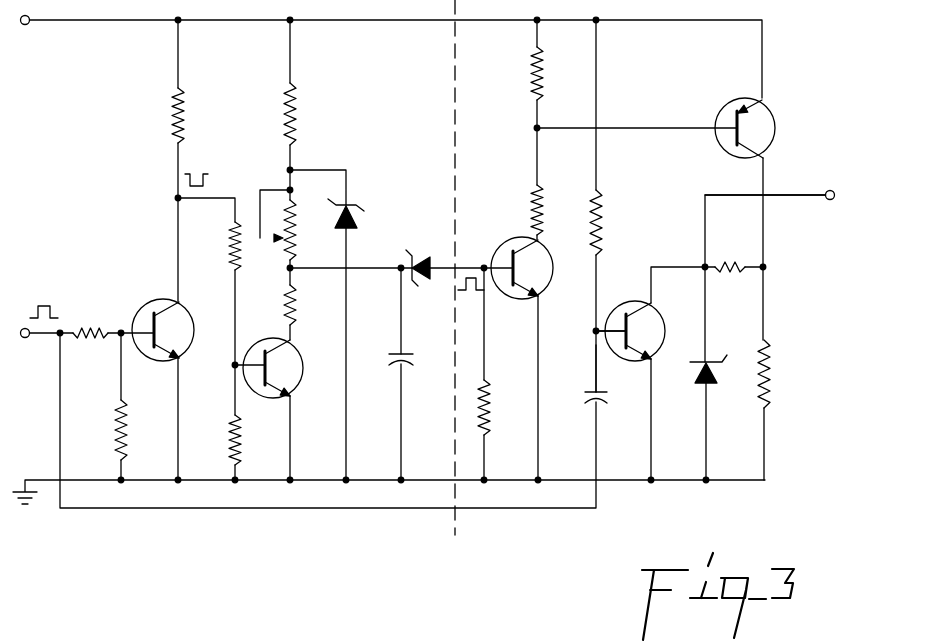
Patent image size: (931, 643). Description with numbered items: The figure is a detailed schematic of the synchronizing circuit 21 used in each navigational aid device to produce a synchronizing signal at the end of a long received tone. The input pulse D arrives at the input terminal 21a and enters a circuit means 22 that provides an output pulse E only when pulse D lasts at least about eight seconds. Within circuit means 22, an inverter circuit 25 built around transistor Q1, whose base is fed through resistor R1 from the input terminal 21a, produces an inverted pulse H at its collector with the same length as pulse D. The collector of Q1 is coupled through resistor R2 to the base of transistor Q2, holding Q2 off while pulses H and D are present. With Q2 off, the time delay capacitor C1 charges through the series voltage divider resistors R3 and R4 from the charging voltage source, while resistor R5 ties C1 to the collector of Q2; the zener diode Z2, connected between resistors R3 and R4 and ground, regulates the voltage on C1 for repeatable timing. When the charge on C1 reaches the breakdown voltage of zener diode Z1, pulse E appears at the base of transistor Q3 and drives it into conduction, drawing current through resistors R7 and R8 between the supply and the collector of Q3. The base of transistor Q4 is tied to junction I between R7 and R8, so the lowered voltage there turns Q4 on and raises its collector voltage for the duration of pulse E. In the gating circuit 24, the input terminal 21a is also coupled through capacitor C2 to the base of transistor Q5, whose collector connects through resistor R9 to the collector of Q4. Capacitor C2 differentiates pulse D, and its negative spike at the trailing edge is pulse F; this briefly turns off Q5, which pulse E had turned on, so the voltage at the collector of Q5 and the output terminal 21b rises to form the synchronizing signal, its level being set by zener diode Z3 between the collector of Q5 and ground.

The synchronizing circuit 21 is at (412, 80).
The input terminal 21a is at (43, 362).
The output terminal 21b is at (829, 192).
The circuit means 22 is at (377, 325).
The gating circuit 24 is at (655, 235).
The inverter circuit 25 is at (160, 403).
The input pulse D is at (35, 309).
The output pulse E is at (462, 266).
The negative pulse F is at (596, 357).
The pulse H is at (218, 199).
The junction I is at (628, 126).
The resistor R1 is at (96, 318).
The resistor R2 is at (250, 246).
The series voltage divider resistor R3 is at (310, 114).
The series voltage divider resistor R4 is at (306, 230).
The resistor R5 is at (307, 305).
The resistor R7 is at (553, 73).
The resistor R8 is at (553, 209).
The resistor R9 is at (734, 250).
The transistor Q1 is at (177, 327).
The transistor Q2 is at (279, 368).
The transistor Q3 is at (533, 269).
The transistor Q4 is at (726, 126).
The transistor Q5 is at (647, 331).
The zener diode Z1 is at (442, 257).
The zener diode Z2 is at (362, 213).
The zener diode Z3 is at (713, 382).
The time delay capacitor C1 is at (414, 373).
The coupling capacitor C2 is at (607, 408).